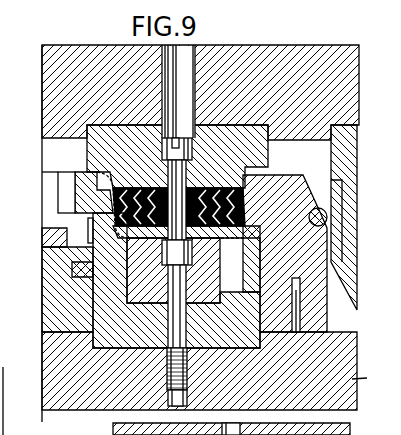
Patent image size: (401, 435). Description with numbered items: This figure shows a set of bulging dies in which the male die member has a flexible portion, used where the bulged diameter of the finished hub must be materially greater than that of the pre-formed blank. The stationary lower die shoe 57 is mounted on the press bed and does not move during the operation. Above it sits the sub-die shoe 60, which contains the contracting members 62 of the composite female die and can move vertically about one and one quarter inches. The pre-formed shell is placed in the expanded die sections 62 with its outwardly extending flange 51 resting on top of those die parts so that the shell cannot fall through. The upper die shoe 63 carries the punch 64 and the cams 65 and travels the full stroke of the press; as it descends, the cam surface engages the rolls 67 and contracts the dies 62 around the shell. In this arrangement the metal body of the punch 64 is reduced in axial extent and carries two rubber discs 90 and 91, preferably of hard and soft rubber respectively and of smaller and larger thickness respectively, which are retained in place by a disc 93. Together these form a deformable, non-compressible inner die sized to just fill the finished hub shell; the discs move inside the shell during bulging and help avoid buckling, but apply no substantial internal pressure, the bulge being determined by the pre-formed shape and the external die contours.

The outwardly extending flange 51 is at (100, 182).
The lower die shoe 57 is at (50, 347).
The sub-die shoe 60 is at (50, 307).
The contracting members of the composite female die 62 is at (310, 250).
The upper die shoe 63 is at (200, 81).
The punch 64 is at (100, 155).
The cam 65 is at (352, 147).
The roll 67 is at (327, 217).
The rubber disc 90 is at (110, 197).
The rubber disc 91 is at (128, 236).
The retaining disc 93 is at (72, 267).